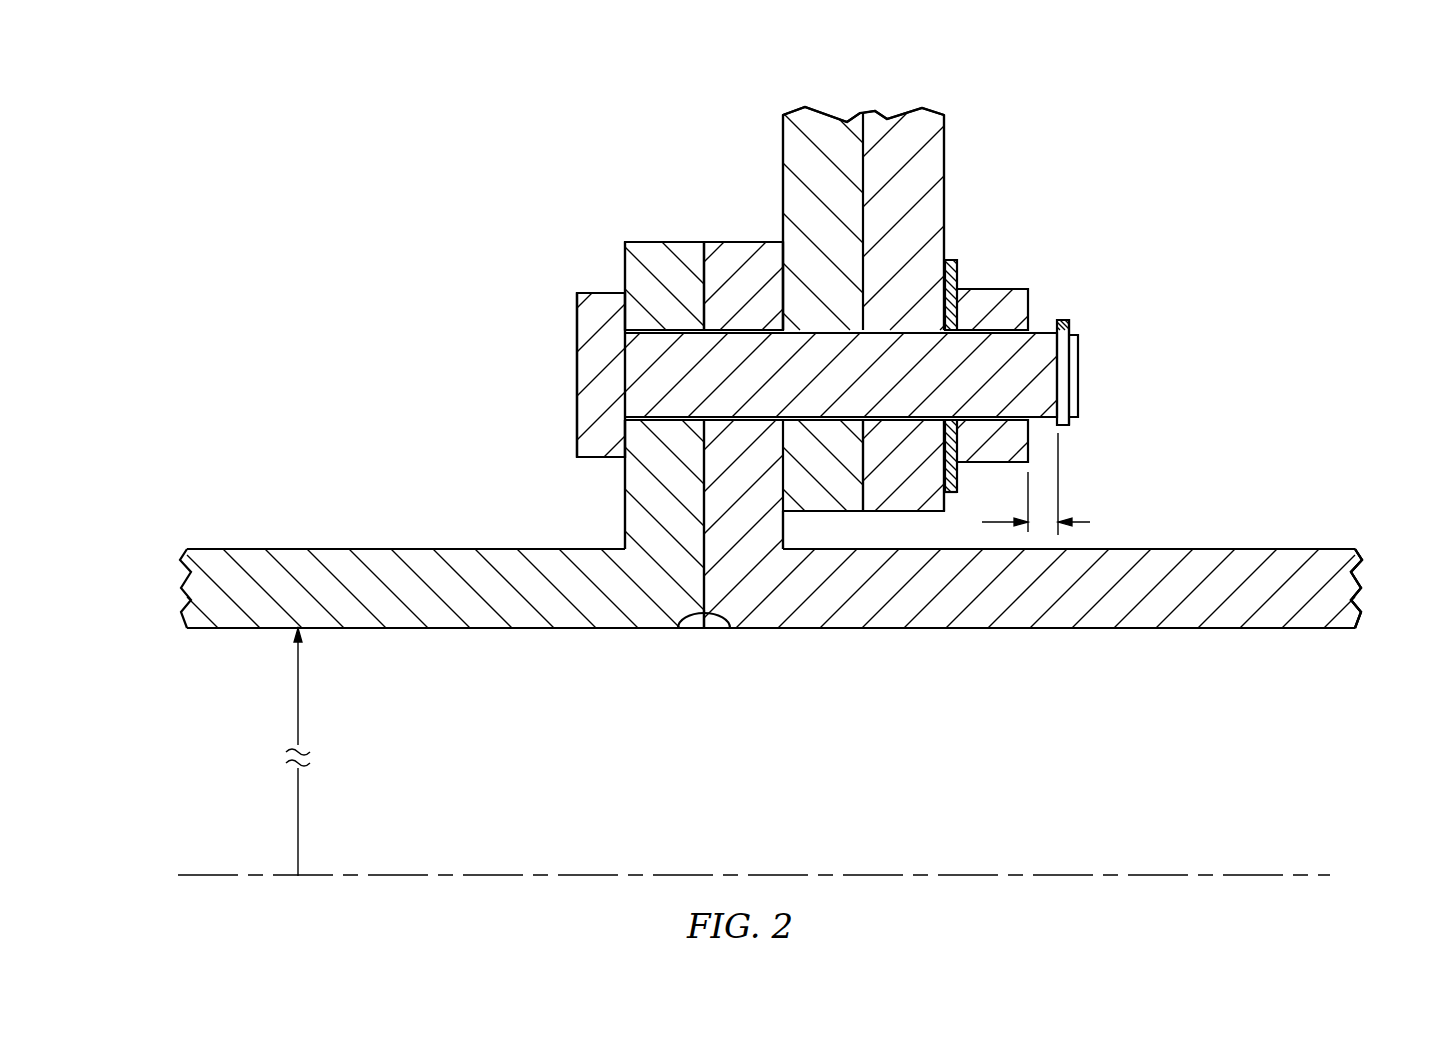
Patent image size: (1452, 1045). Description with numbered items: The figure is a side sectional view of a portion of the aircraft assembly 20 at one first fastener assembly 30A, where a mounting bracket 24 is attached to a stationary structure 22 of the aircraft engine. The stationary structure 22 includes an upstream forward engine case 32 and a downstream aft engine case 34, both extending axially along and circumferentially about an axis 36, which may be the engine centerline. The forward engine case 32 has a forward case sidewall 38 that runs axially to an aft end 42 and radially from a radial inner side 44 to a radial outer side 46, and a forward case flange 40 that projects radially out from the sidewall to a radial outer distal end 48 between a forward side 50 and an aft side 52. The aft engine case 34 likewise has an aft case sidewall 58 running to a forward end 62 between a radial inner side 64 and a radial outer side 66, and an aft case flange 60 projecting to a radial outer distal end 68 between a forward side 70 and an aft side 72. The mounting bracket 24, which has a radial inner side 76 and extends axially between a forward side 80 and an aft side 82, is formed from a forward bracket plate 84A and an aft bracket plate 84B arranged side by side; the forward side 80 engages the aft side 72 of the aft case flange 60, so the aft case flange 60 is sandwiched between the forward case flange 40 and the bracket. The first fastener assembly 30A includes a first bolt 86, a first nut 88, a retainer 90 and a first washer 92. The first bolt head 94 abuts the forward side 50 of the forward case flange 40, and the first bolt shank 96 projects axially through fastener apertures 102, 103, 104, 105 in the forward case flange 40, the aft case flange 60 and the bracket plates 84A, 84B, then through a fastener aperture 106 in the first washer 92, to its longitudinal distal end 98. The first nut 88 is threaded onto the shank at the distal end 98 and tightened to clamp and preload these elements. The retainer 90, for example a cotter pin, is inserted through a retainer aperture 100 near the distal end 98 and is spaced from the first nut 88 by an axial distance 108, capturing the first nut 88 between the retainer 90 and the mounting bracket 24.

The rotor assembly 20 is at (1283, 115).
The stationary structure 22 is at (1302, 452).
The mounting bracket 24 is at (963, 110).
The first fastener assembly 30A is at (543, 364).
The forward engine case 32 is at (333, 528).
The aft engine case 34 is at (1200, 548).
The axis 36 is at (192, 872).
The forward case sidewall 38 is at (185, 590).
The forward case flange 40 is at (637, 510).
The aft end 42 is at (727, 630).
The radial inner side 44 is at (210, 628).
The radial outer side 46 is at (220, 548).
The radial outer distal end 48 is at (647, 242).
The forward side 50 is at (625, 258).
The aft side 52 is at (705, 268).
The aft case sidewall 58 is at (1370, 585).
The aft case flange 60 is at (758, 535).
The forward end 62 is at (678, 627).
The radial inner side 64 is at (1320, 628).
The radial outer side 66 is at (1332, 548).
The radial outer distal end 68 is at (752, 242).
The forward side 70 is at (703, 286).
The aft side 72 is at (784, 263).
The radial inner side 76 is at (902, 512).
The forward side 80 is at (782, 125).
The aft side 82 is at (943, 138).
The forward bracket plate 84A is at (827, 122).
The aft bracket plate 84B is at (902, 122).
The first bolt 86 is at (558, 322).
The first nut 88 is at (1013, 275).
The retainer 90 is at (1073, 298).
The first washer 92 is at (962, 250).
The first bolt head 94 is at (577, 422).
The first bolt shank 96 is at (668, 358).
The longitudinal distal end 98 is at (1077, 352).
The retainer aperture 100 is at (1077, 400).
The fastener aperture 102 is at (675, 422).
The fastener aperture 103 is at (740, 422).
The fastener aperture 104 is at (833, 422).
The fastener aperture 105 is at (903, 422).
The fastener aperture 106 is at (955, 490).
The axial distance 108 is at (1093, 498).